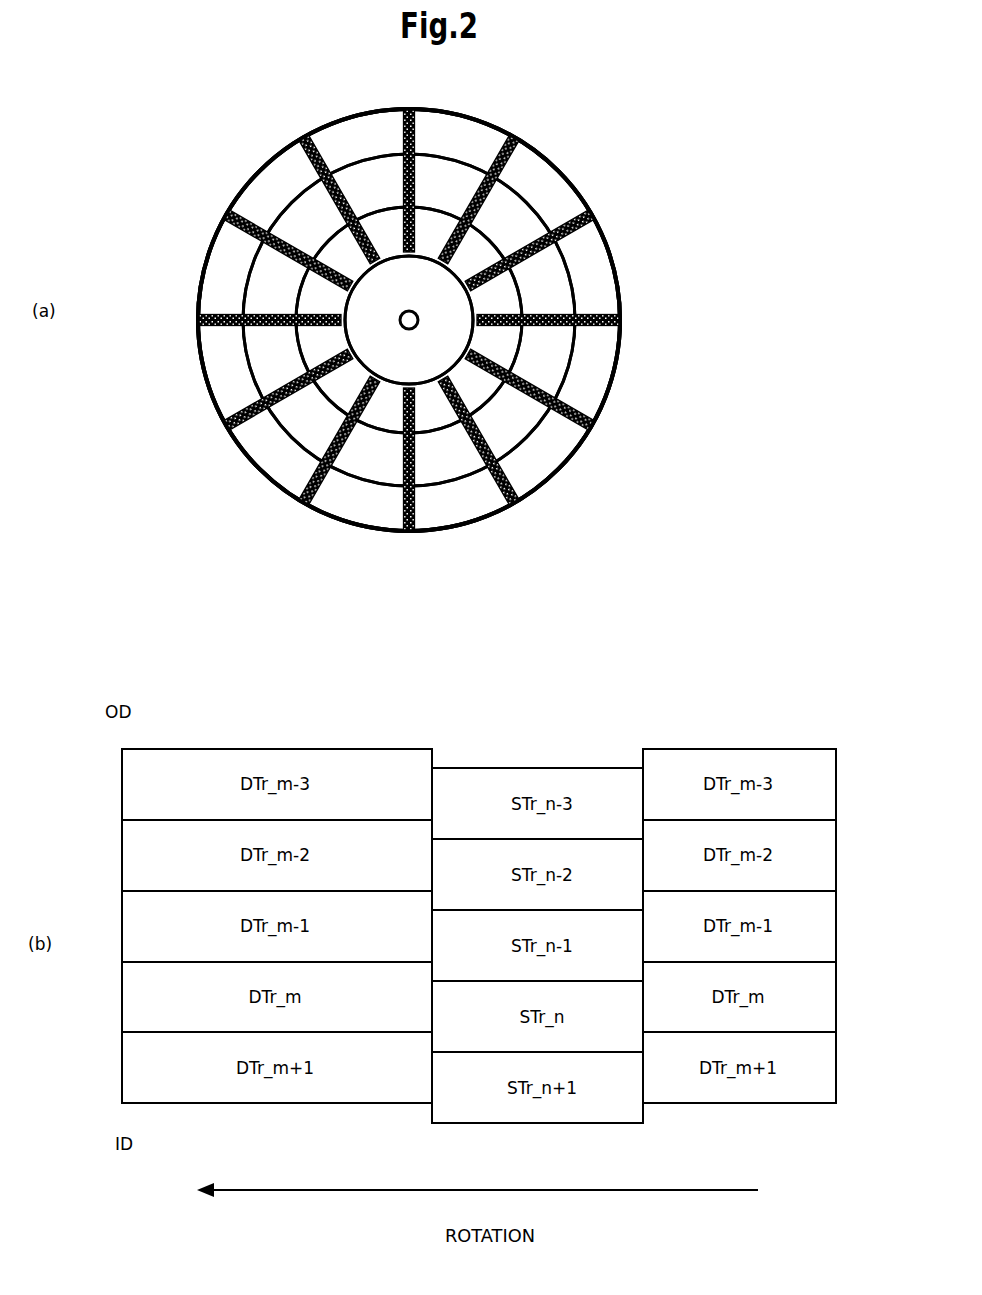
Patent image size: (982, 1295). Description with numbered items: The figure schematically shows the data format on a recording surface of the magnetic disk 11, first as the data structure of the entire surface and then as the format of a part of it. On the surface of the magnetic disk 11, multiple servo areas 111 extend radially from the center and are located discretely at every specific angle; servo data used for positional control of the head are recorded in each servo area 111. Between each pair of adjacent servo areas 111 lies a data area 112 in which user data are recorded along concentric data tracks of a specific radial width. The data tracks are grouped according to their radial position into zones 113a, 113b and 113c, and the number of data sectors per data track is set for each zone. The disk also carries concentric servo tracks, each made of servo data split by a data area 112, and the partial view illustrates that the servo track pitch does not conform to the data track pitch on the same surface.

The magnetic disk 11 is at (202, 283).
The servo area 111 is at (595, 213).
The data area 112 is at (547, 186).
The zone 113a is at (600, 365).
The zone 113b is at (513, 423).
The zone 113c is at (507, 298).